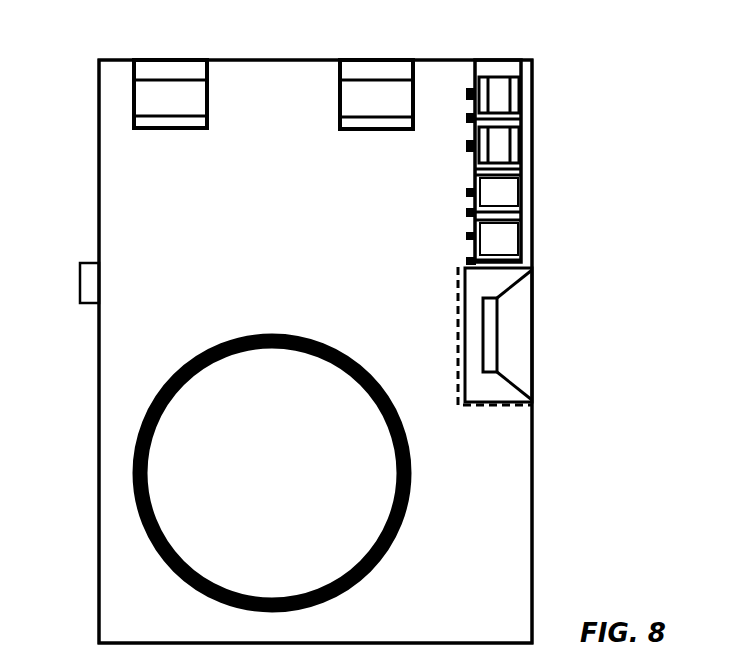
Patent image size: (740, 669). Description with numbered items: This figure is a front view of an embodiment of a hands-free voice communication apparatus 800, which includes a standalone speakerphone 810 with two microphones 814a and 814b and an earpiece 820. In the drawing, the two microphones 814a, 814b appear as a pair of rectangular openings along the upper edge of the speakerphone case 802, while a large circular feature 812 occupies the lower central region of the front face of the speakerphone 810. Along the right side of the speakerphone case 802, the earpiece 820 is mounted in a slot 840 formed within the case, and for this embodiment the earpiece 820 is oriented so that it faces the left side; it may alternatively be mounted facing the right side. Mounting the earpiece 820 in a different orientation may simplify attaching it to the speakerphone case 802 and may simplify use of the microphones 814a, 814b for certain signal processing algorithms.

The hands-free voice communication apparatus 800 is at (101, 45).
The speakerphone case 802 is at (99, 470).
The standalone speakerphone 810 is at (315, 351).
The circular window/display 812 is at (272, 473).
The microphone 814a is at (208, 99).
The microphone 814b is at (340, 99).
The earpiece 820 is at (499, 60).
The slot 840 is at (458, 337).